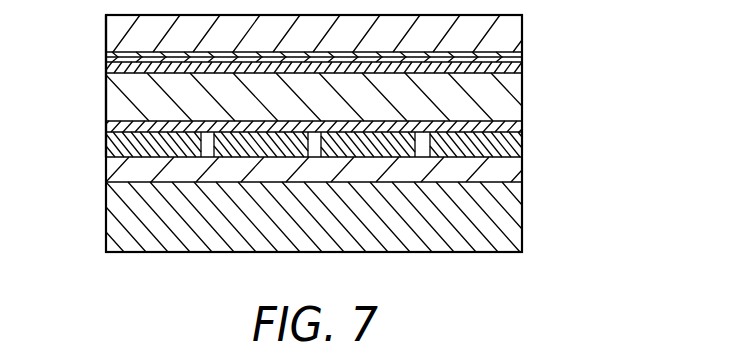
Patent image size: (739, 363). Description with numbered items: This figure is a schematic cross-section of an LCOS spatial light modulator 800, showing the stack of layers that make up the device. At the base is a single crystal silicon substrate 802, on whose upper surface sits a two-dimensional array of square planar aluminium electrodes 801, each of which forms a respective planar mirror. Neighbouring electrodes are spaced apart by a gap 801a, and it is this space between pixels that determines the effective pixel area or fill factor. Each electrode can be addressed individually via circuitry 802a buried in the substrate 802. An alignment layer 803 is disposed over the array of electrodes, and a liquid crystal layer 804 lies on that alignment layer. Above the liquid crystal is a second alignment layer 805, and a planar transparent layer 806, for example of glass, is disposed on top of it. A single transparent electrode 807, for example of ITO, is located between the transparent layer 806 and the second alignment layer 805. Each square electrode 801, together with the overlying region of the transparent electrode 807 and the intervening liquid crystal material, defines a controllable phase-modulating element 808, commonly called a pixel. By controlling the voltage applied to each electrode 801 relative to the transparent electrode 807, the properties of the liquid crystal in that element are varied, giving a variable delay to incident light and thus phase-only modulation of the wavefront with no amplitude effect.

The light emitting device 800 is at (545, 250).
The square planar aluminium electrodes 801 is at (524, 145).
The gap 801a is at (422, 150).
The single crystal silicon substrate 802 is at (105, 219).
The circuitry 802a is at (105, 174).
The alignment layer 803 is at (524, 120).
The liquid crystal layer 804 is at (524, 95).
The second alignment layer 805 is at (524, 70).
The planar transparent layer 806 is at (524, 30).
The transparent electrode 807 is at (524, 52).
The phase-modulating element 808 is at (102, 16).